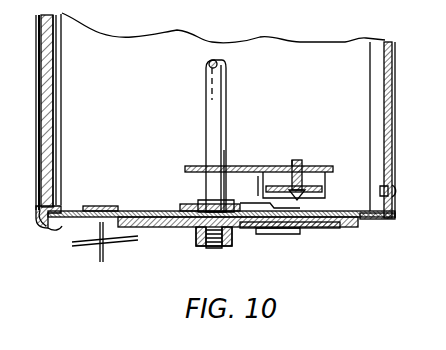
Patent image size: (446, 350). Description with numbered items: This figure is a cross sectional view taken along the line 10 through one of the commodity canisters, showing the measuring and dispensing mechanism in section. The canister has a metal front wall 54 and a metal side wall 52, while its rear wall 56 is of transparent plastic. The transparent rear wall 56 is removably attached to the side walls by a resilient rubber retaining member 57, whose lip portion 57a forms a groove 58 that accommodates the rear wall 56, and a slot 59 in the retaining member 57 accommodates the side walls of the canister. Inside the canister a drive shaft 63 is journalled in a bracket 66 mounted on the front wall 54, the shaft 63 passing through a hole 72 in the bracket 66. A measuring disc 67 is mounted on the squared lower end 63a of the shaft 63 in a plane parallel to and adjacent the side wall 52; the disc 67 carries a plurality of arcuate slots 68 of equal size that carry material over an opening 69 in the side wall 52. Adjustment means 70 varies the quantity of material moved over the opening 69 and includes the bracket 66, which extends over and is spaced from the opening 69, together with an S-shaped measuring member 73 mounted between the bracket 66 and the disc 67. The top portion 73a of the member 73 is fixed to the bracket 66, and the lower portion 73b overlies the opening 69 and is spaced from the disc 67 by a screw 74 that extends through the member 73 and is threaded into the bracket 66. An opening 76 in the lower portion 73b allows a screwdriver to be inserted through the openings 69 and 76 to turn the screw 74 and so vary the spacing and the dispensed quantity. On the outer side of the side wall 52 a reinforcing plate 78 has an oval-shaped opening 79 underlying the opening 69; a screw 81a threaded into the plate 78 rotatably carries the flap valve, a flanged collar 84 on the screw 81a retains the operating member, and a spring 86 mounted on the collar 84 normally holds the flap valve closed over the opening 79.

The section line 10 is at (442, 206).
The side wall 52 is at (362, 219).
The front wall 54 is at (388, 106).
The transparent rear wall 56 is at (48, 94).
The resilient retaining member 57 is at (58, 162).
The lip portion 57a is at (70, 198).
The groove 58 is at (46, 194).
The slot 59 is at (60, 230).
The drive shaft 63 is at (218, 108).
The squared lower end 63a is at (206, 204).
The bracket 66 is at (240, 166).
The measuring disc 67 is at (190, 213).
The arcuate slots 68 is at (127, 210).
The opening 69 is at (288, 234).
The adjustment means 70 is at (323, 152).
The hole 72 is at (222, 158).
The S-shaped measuring member 73 is at (326, 183).
The top portion 73a is at (288, 164).
The lower portion 73b is at (258, 186).
The screw 74 is at (298, 160).
The opening 76 is at (270, 203).
The reinforcing plate 78 is at (104, 252).
The oval-shaped opening 79 is at (316, 228).
The screw 81a is at (216, 248).
The flanged collar 84 is at (196, 242).
The spring 86 is at (232, 240).